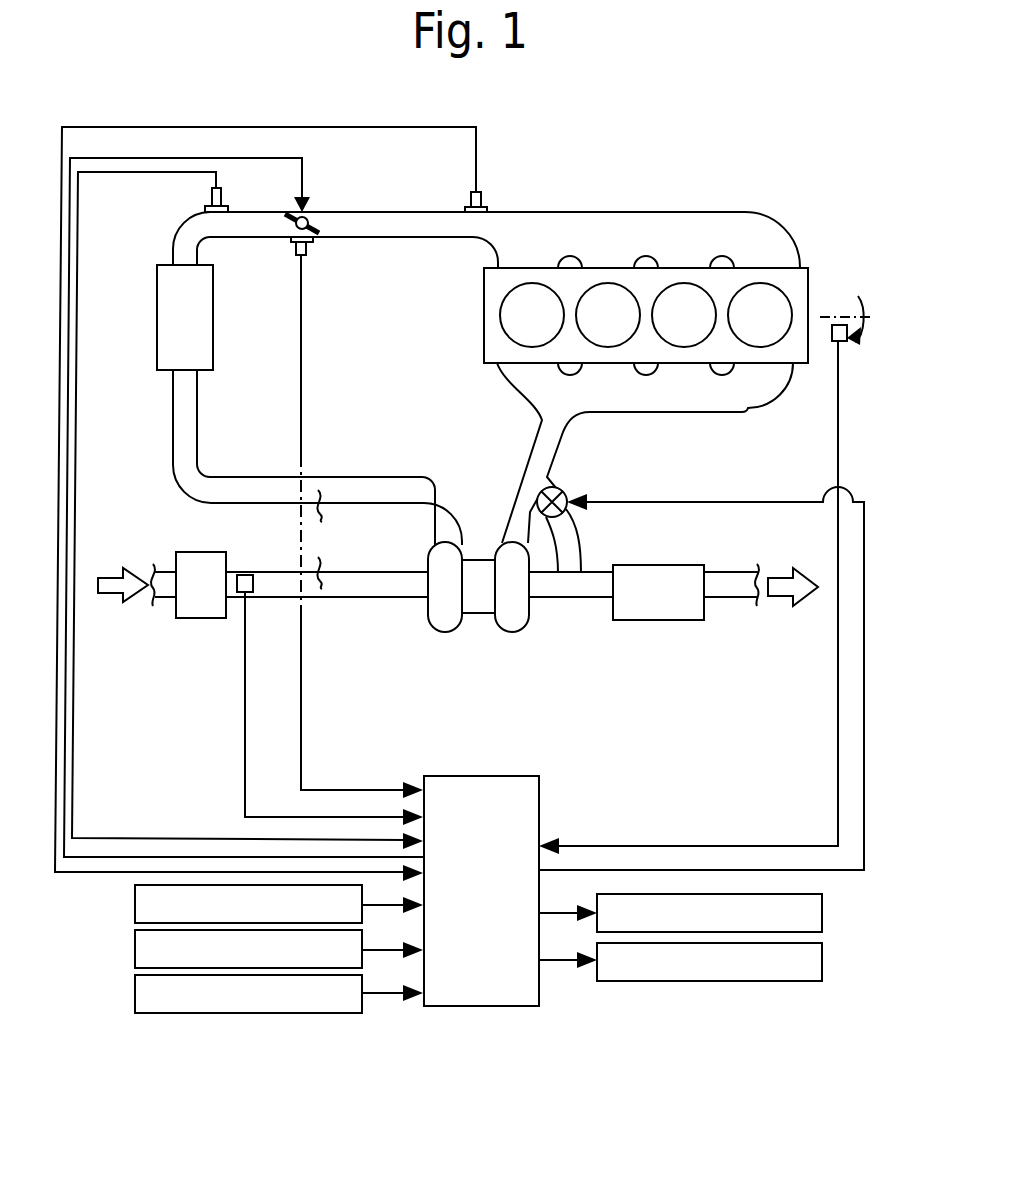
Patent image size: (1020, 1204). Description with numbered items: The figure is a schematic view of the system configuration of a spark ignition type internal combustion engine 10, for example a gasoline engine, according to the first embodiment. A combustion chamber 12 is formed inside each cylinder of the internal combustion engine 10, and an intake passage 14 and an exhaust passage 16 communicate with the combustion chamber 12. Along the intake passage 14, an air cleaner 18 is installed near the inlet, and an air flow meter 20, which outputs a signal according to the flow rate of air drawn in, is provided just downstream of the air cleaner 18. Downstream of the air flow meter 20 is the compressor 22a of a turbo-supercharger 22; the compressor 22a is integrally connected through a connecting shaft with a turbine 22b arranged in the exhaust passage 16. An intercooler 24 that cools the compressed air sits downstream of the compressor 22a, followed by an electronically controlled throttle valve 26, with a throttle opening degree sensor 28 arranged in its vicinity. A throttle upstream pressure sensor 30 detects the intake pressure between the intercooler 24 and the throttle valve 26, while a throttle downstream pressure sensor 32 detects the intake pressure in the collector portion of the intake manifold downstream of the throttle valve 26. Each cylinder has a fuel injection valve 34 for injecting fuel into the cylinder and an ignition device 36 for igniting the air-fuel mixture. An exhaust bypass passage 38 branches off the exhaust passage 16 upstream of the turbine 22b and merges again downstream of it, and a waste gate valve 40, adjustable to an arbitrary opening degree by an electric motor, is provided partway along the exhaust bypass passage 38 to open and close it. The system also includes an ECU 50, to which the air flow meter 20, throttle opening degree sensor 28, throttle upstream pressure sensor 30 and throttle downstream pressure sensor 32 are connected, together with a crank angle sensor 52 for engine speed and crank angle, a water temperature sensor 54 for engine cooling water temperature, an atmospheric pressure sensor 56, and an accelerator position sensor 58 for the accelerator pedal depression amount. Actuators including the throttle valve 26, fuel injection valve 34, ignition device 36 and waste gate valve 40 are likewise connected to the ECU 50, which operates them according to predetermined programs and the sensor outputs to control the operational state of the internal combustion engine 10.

The internal combustion engine 10 is at (770, 144).
The combustion chamber 12 is at (515, 312).
The intake passage 14 is at (449, 409).
The exhaust passage 16 is at (553, 440).
The air cleaner 18 is at (183, 552).
The air flow meter 20 is at (245, 575).
The turbo-supercharger 22 is at (482, 625).
The compressor 22a is at (442, 625).
The turbine 22b is at (512, 625).
The intercooler 24 is at (214, 325).
The throttle valve 26 is at (290, 213).
The throttle opening degree sensor 28 is at (306, 250).
The throttle upstream pressure sensor 30 is at (212, 196).
The throttle downstream pressure sensor 32 is at (472, 198).
The fuel injection valve 34 is at (822, 913).
The ignition device 36 is at (822, 960).
The exhaust bypass passage 38 is at (568, 528).
The waste gate valve 40 is at (560, 490).
The ECU 50 is at (470, 776).
The crank angle sensor 52 is at (847, 345).
The water temperature sensor 54 is at (135, 905).
The atmospheric pressure sensor 56 is at (135, 950).
The accelerator position sensor 58 is at (135, 993).